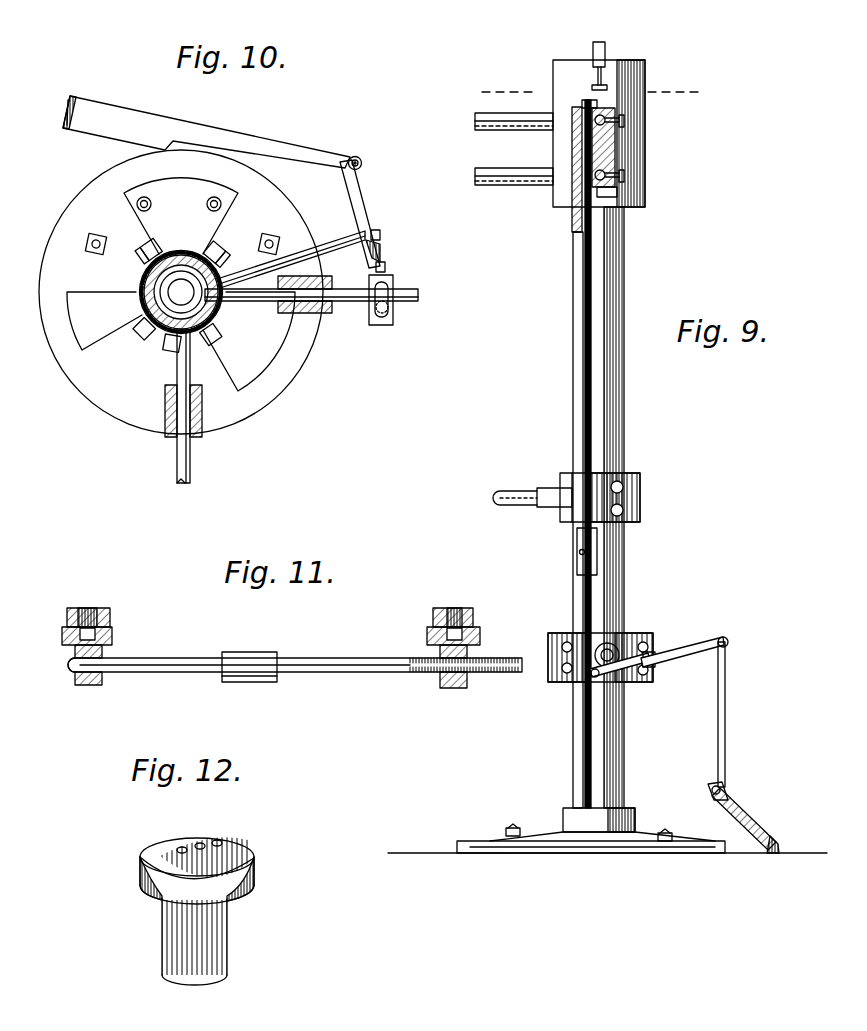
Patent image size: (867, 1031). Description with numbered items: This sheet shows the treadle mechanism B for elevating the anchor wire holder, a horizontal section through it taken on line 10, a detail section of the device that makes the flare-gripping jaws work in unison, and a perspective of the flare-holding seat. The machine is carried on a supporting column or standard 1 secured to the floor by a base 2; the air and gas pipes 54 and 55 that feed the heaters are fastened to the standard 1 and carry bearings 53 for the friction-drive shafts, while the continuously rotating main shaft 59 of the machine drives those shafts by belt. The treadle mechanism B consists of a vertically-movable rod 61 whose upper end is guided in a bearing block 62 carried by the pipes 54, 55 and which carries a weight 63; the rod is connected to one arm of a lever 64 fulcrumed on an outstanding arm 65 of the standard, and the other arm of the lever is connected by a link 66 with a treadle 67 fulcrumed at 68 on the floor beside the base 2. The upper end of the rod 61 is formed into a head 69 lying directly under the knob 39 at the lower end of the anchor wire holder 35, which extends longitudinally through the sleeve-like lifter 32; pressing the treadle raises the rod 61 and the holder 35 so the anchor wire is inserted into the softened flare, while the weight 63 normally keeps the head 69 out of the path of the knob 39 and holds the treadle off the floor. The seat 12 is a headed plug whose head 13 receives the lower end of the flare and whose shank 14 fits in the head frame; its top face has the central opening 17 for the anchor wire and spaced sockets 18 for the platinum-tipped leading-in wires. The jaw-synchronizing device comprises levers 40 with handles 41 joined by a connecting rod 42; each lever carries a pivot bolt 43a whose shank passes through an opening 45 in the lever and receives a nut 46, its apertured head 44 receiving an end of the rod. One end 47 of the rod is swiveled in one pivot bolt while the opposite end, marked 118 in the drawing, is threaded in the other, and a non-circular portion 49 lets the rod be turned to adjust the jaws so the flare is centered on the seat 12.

In FIG. 10, the supporting column or standard 1 is at (150, 281).
In FIG. 9, the supporting column or standard 1 is at (620, 418).
In FIG. 10, the base 2 is at (125, 410).
In FIG. 9, the base 2 is at (497, 855).
In FIG. 9, the section line 10 is at (590, 93).
In FIG. 12, the seat 12 is at (187, 894).
In FIG. 12, the head of the seat 13 is at (197, 870).
In FIG. 12, the shank portion of the seat 14 is at (210, 935).
In FIG. 12, the opening 17 is at (200, 843).
In FIG. 12, the sockets 18 is at (178, 848).
In FIG. 9, the lifter 32 is at (603, 46).
In FIG. 9, the anchor wire holder 35 is at (606, 80).
In FIG. 9, the knob 39 is at (592, 87).
In FIG. 11, the levers 40 is at (64, 635).
In FIG. 11, the handles 41 is at (73, 680).
In FIG. 11, the connecting bar 42 is at (345, 673).
In FIG. 11, the pivot bolts 43a is at (88, 608).
In FIG. 11, the apertured heads 44 is at (453, 689).
In FIG. 11, the opening 45 is at (112, 637).
In FIG. 11, the nut 46 is at (108, 619).
In FIG. 11, the swiveled end of connecting rod 47 is at (96, 686).
In FIG. 11, the non-circular portion 49 is at (258, 655).
In FIG. 10, the bearings 53 is at (315, 313).
In FIG. 9, the air and gas pipe 54 is at (505, 179).
In FIG. 10, the air and gas pipe 55 is at (420, 296).
In FIG. 9, the air and gas pipe 55 is at (512, 121).
In FIG. 10, the main shaft 59 is at (228, 334).
In FIG. 9, the main shaft 59 is at (505, 494).
In FIG. 9, the vertically-movable rod 61 is at (578, 339).
In FIG. 10, the bearing block 62 is at (376, 327).
In FIG. 9, the bearing block 62 is at (614, 150).
In FIG. 9, the weight 63 is at (598, 561).
In FIG. 10, the lever 64 is at (372, 219).
In FIG. 9, the lever 64 is at (688, 645).
In FIG. 10, the outstanding arm 65 is at (328, 255).
In FIG. 9, the outstanding arm 65 is at (612, 654).
In FIG. 10, the link 66 is at (362, 164).
In FIG. 9, the link 66 is at (726, 727).
In FIG. 10, the treadle 67 is at (162, 126).
In FIG. 9, the treadle 67 is at (744, 830).
In FIG. 10, the treadle fulcrum 68 is at (70, 97).
In FIG. 9, the treadle fulcrum 68 is at (762, 857).
In FIG. 10, the head 69 is at (395, 316).
In FIG. 9, the head 69 is at (597, 104).
In FIG. 11, the threaded portion 118 is at (508, 675).
In FIG. 10, the treadle mechanism B is at (372, 180).
In FIG. 9, the treadle mechanism B is at (708, 622).